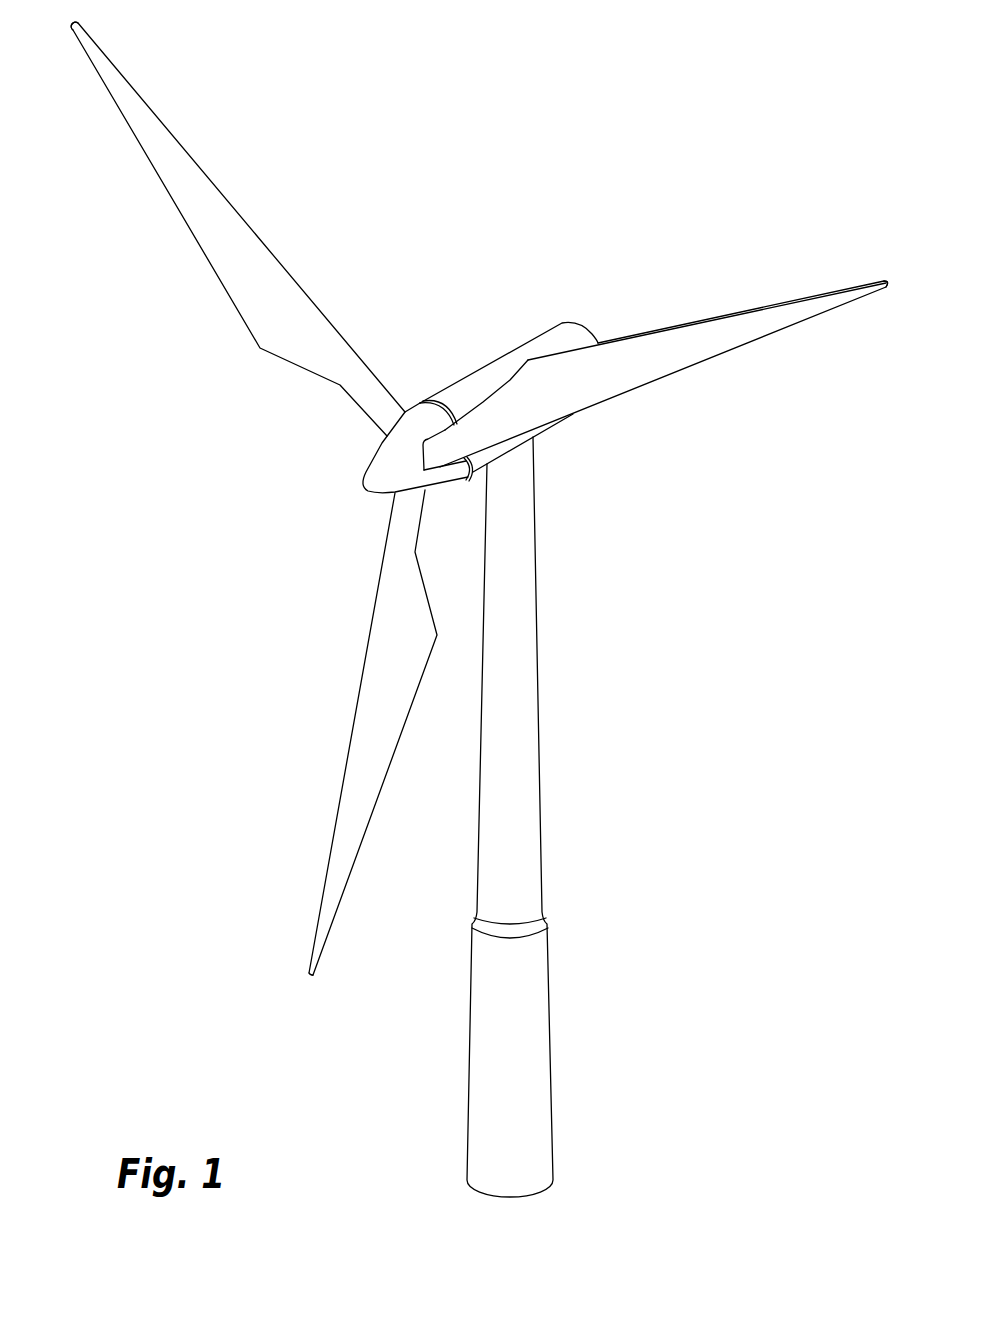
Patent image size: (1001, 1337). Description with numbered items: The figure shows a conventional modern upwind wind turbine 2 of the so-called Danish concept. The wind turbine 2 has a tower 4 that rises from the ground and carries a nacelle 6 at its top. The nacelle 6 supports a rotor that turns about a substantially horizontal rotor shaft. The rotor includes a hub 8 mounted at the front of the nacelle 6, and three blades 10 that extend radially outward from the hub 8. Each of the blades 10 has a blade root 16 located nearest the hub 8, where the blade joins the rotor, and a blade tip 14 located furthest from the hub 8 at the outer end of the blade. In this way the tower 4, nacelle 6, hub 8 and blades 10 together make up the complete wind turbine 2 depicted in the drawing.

The wind turbine 2 is at (642, 757).
The tower 4 is at (527, 678).
The nacelle 6 is at (473, 383).
The hub 8 is at (382, 467).
The blade 10 is at (272, 318).
The blade tip 14 is at (117, 78).
The blade root 16 is at (390, 422).